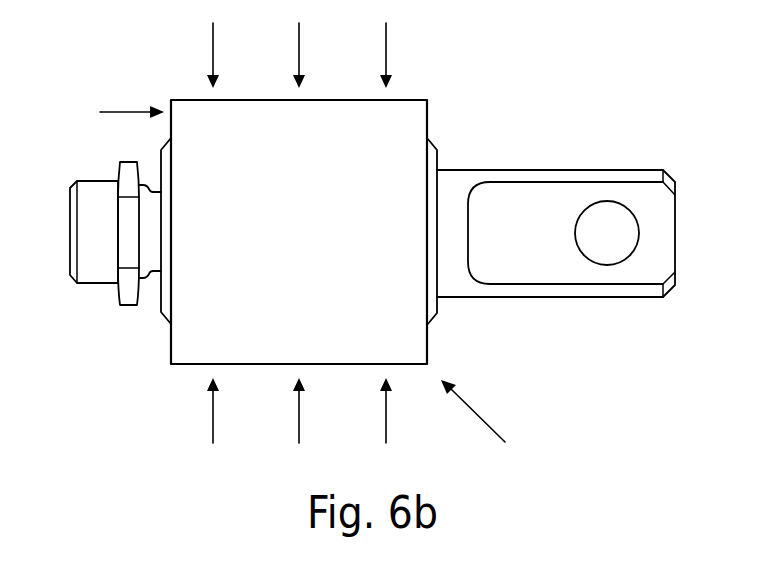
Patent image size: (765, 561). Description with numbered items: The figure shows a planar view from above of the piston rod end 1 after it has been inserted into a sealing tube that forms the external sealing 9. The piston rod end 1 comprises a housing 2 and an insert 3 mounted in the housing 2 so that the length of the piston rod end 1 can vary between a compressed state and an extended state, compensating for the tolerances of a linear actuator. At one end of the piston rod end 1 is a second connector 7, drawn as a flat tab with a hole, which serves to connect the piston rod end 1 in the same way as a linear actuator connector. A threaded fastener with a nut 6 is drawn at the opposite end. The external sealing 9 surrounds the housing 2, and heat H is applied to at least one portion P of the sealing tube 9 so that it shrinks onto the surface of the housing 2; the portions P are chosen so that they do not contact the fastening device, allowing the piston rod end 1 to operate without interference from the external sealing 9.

The piston rod end 1 is at (460, 127).
The housing 2 is at (168, 315).
The insert 3 is at (458, 280).
The screw head with nut 6 is at (99, 270).
The second connector 7 is at (624, 177).
The external sealing 9 is at (329, 338).
The heat H is at (300, 235).
The portion P is at (301, 284).